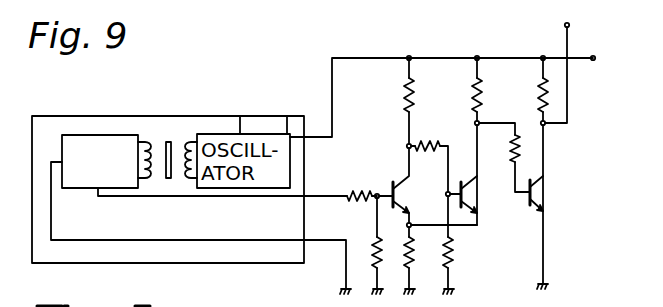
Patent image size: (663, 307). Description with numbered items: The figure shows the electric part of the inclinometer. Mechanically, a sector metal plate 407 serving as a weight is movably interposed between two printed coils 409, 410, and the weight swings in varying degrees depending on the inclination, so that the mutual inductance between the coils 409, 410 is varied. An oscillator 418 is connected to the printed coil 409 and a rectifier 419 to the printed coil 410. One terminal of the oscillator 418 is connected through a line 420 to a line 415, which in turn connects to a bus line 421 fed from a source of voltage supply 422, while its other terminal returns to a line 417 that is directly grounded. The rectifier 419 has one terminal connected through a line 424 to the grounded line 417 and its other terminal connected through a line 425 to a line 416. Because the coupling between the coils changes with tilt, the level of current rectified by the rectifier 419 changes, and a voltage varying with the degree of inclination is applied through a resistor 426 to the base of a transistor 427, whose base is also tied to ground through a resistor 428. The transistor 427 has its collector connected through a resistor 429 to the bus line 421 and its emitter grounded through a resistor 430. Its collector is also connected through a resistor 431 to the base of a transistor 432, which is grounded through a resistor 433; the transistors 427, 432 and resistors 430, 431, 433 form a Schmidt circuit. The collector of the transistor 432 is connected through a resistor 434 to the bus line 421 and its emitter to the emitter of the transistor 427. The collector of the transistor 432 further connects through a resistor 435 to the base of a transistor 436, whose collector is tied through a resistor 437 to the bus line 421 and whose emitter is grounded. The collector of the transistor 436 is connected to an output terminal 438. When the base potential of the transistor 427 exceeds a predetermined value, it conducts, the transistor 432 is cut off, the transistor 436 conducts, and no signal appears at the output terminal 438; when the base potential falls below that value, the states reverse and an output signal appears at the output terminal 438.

The sector metal plate 407 is at (168, 142).
The printed coil 409 is at (191, 140).
The printed coil 410 is at (146, 142).
The line 415 is at (322, 135).
The line 416 is at (322, 196).
The line 417 is at (317, 240).
The oscillator 418 is at (240, 116).
The rectifier 419 is at (80, 134).
The line 420 is at (287, 120).
The bus line 421 is at (377, 58).
The source of voltage supply 422 is at (595, 60).
The line 424 is at (53, 241).
The line 425 is at (178, 197).
The resistor 426 is at (359, 190).
The transistor 427 is at (400, 193).
The resistor 428 is at (373, 252).
The resistor 429 is at (403, 94).
The resistor 430 is at (415, 262).
The resistor 431 is at (430, 150).
The transistor 432 is at (479, 200).
The resistor 433 is at (450, 262).
The resistor 434 is at (472, 80).
The resistor 435 is at (522, 148).
The transistor 436 is at (546, 193).
The resistor 437 is at (540, 80).
The output terminal 438 is at (564, 25).